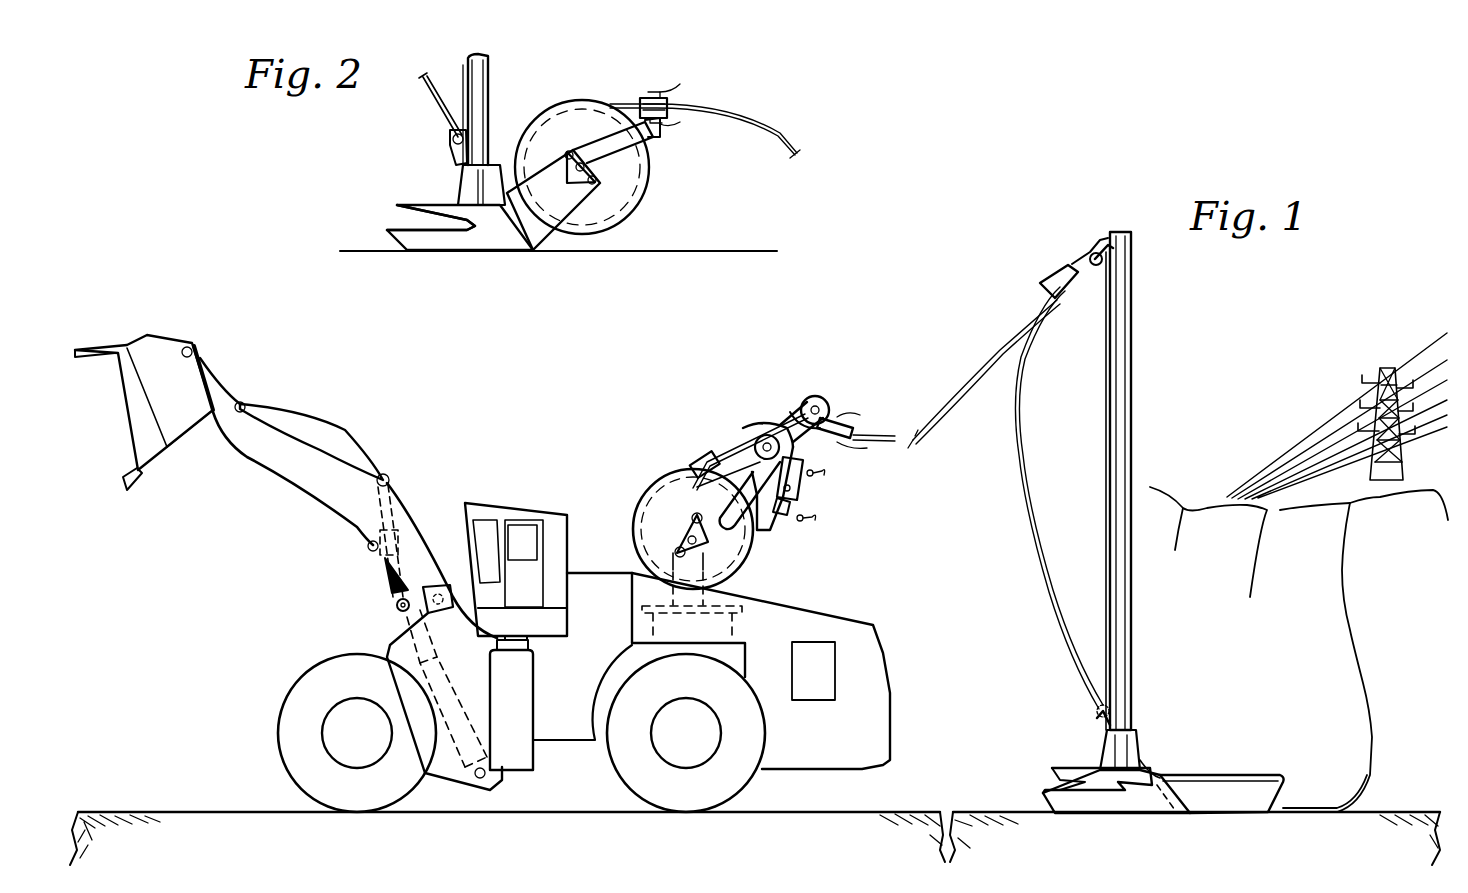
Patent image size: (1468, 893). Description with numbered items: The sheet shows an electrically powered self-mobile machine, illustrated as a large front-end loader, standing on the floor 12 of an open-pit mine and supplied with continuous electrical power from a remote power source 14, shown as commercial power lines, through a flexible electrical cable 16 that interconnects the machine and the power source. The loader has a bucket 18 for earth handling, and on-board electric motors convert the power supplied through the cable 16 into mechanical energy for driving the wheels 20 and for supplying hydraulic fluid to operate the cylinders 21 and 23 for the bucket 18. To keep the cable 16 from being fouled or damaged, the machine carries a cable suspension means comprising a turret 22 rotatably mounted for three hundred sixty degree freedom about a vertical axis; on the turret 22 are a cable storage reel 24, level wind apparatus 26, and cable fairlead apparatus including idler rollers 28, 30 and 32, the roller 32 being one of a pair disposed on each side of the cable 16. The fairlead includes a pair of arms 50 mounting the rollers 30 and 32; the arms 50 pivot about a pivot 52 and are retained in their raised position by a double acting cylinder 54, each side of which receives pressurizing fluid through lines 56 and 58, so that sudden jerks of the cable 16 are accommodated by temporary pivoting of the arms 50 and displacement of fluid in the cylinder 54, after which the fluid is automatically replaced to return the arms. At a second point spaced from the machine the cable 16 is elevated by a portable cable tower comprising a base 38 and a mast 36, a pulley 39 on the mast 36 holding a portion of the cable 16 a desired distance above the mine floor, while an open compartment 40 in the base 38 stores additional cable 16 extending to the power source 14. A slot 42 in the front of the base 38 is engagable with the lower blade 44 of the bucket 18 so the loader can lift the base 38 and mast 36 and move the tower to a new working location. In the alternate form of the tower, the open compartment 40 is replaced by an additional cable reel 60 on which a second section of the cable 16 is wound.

In FIG. 1, the floor 12 is at (225, 812).
In FIG. 1, the remote power source 14 is at (1355, 392).
In FIG. 2, the flexible electrical cable 16 is at (432, 95).
In FIG. 1, the flexible electrical cable 16 is at (1027, 477).
In FIG. 1, the bucket 18 is at (178, 388).
In FIG. 1, the wheels 20 is at (300, 725).
In FIG. 1, the cylinder 21 is at (470, 698).
In FIG. 1, the turret 22 is at (745, 588).
In FIG. 1, the cylinder 23 is at (375, 578).
In FIG. 1, the cable storage reel 24 is at (640, 507).
In FIG. 1, the level wind apparatus 26 is at (700, 457).
In FIG. 1, the idler roller 28 is at (765, 417).
In FIG. 1, the idler roller 30 is at (813, 387).
In FIG. 1, the idler roller 32 is at (847, 417).
In FIG. 2, the mast 36 is at (488, 68).
In FIG. 1, the mast 36 is at (1128, 385).
In FIG. 2, the base 38 is at (495, 262).
In FIG. 1, the base 38 is at (1140, 800).
In FIG. 1, the pulley 39 is at (1058, 280).
In FIG. 1, the open compartment 40 is at (1247, 797).
In FIG. 2, the slot 42 is at (418, 220).
In FIG. 1, the slot 42 is at (1060, 790).
In FIG. 1, the lower blade 44 is at (123, 483).
In FIG. 1, the arms 50 is at (790, 410).
In FIG. 1, the pivot 52 is at (747, 428).
In FIG. 1, the double acting cylinder 54 is at (803, 478).
In FIG. 1, the line 56 is at (820, 518).
In FIG. 1, the line 58 is at (827, 472).
In FIG. 2, the additional cable reel 60 is at (627, 197).